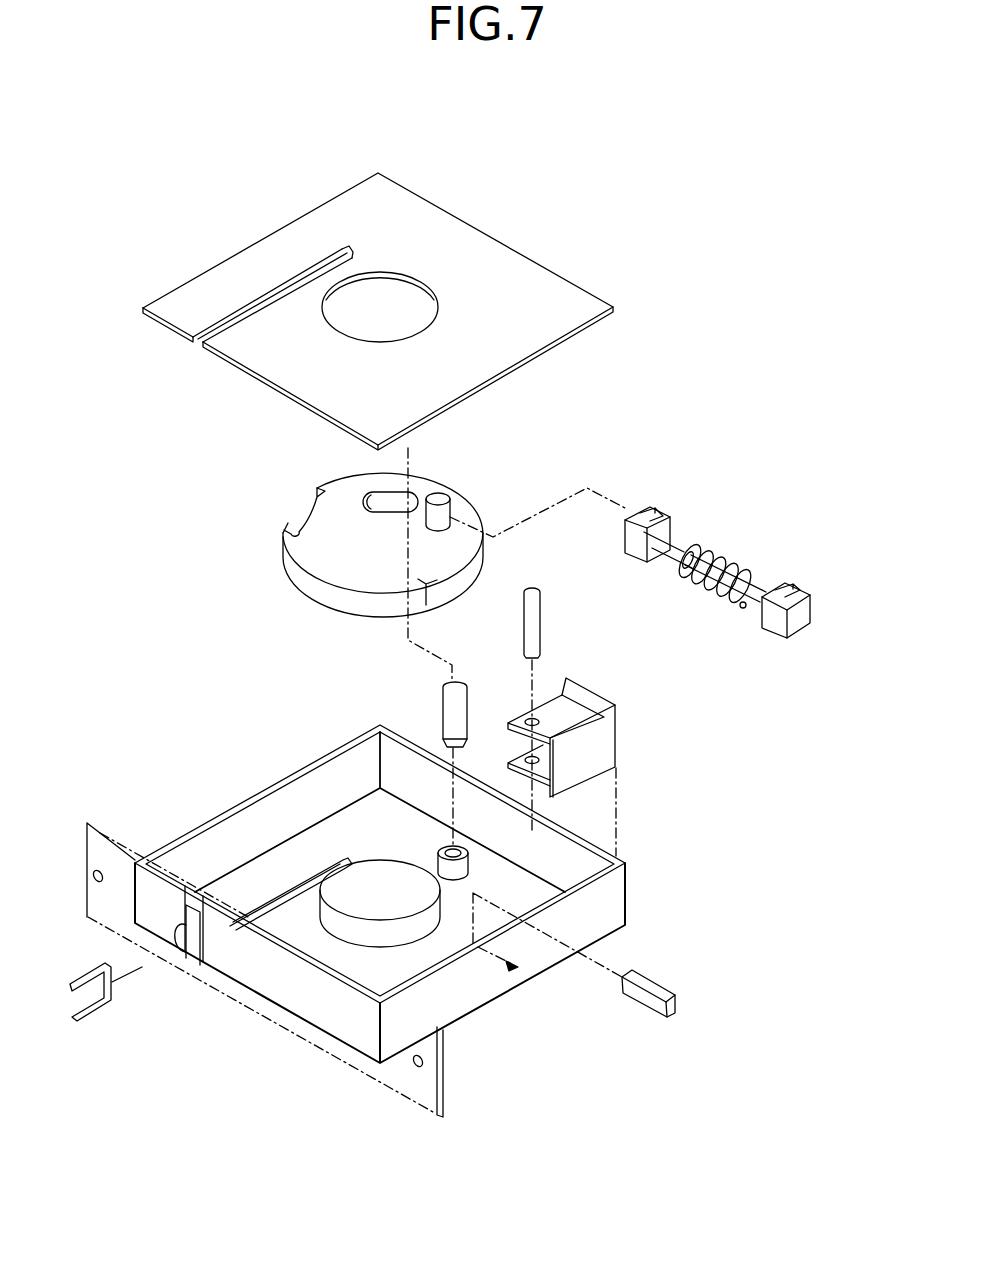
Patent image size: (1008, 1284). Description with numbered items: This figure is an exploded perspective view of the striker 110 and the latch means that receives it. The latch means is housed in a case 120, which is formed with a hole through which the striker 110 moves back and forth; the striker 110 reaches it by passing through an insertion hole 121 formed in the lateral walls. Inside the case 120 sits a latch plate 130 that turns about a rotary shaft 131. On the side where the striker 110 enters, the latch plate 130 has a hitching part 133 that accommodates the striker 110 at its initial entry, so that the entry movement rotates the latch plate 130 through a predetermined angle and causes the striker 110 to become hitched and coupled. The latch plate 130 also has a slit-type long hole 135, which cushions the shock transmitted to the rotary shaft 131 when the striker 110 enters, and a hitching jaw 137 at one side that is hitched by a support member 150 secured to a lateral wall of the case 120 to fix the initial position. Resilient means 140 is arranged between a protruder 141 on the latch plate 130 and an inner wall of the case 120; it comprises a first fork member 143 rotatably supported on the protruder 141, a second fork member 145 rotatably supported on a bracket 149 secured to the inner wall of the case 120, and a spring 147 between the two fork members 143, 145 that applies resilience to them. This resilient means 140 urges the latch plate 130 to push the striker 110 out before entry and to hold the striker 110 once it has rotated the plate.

The striker 110 is at (82, 1022).
The case 120 is at (522, 288).
The insertion hole 121 is at (170, 925).
The latch plate 130 is at (455, 530).
The rotary shaft 131 is at (450, 710).
The hitching part 133 is at (307, 513).
The long hole 135 is at (394, 500).
The hitching jaw 137 is at (433, 603).
The resilient means 140 is at (762, 531).
The protruder 141 is at (440, 492).
The first fork member 143 is at (678, 522).
The second fork member 145 is at (813, 577).
The spring 147 is at (733, 553).
The bracket 149 is at (597, 747).
The support member 150 is at (680, 1005).